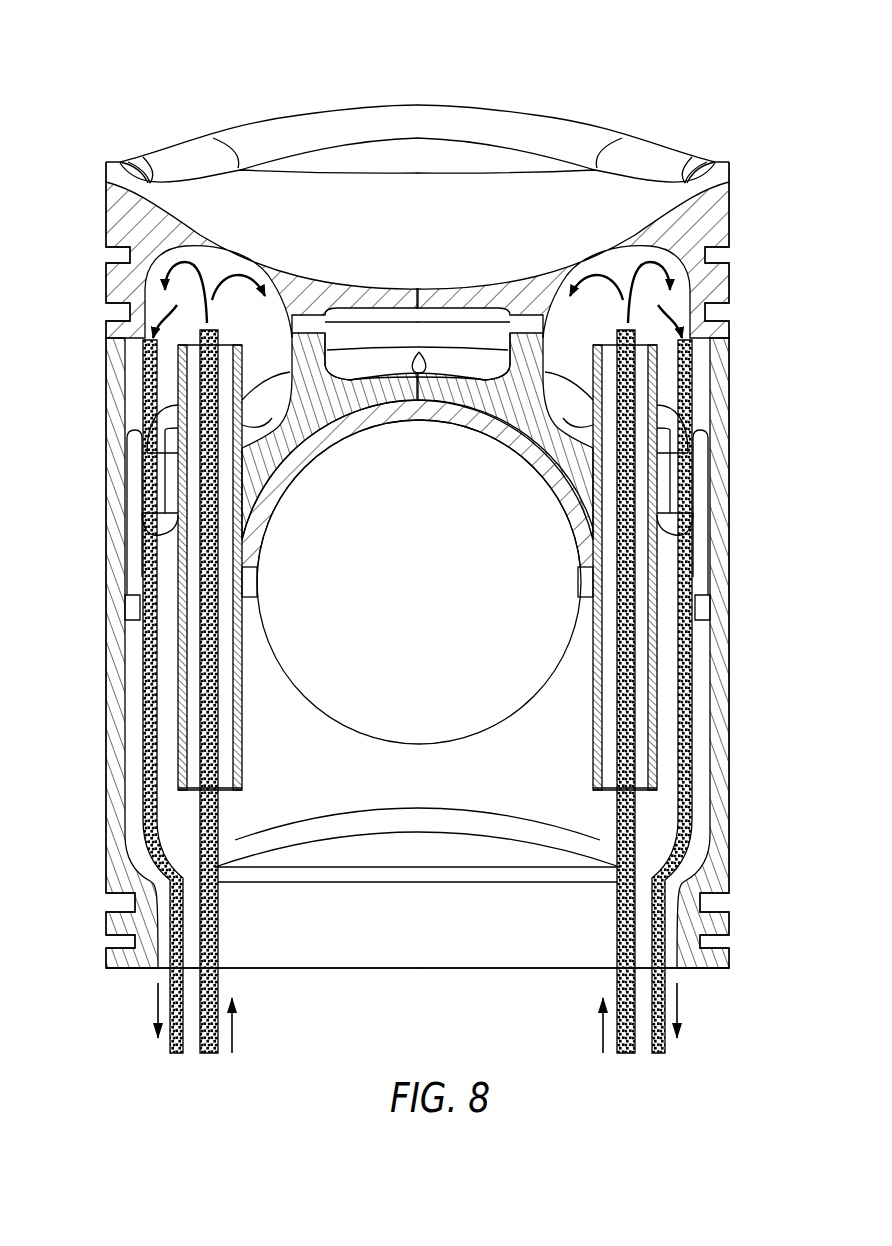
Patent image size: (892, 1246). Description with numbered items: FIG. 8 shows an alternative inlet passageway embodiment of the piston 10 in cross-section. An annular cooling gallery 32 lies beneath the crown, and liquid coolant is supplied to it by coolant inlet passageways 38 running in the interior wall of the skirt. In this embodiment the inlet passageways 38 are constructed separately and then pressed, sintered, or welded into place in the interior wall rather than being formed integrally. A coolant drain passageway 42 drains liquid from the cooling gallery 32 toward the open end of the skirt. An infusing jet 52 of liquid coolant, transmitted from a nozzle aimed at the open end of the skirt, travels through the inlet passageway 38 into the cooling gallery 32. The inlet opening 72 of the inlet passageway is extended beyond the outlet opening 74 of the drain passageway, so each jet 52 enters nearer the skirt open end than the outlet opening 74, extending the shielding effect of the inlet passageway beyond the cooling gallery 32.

The piston 10 is at (222, 88).
The cooling gallery 32 is at (187, 297).
The coolant inlet passageway 38 is at (188, 378).
The coolant drain passageway 42 is at (142, 472).
The infusing jet 52 is at (218, 947).
The inlet opening 72 is at (188, 792).
The outlet opening 74 is at (160, 535).